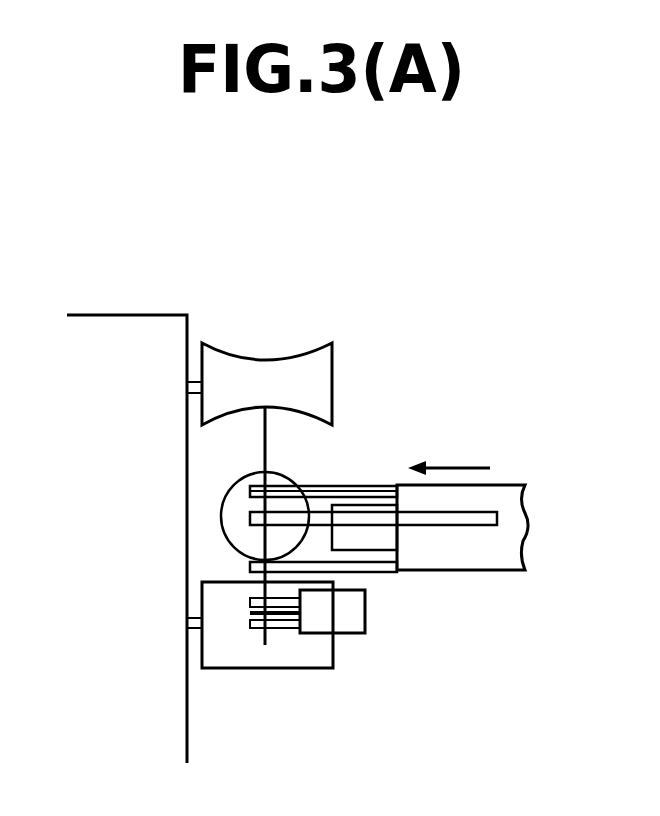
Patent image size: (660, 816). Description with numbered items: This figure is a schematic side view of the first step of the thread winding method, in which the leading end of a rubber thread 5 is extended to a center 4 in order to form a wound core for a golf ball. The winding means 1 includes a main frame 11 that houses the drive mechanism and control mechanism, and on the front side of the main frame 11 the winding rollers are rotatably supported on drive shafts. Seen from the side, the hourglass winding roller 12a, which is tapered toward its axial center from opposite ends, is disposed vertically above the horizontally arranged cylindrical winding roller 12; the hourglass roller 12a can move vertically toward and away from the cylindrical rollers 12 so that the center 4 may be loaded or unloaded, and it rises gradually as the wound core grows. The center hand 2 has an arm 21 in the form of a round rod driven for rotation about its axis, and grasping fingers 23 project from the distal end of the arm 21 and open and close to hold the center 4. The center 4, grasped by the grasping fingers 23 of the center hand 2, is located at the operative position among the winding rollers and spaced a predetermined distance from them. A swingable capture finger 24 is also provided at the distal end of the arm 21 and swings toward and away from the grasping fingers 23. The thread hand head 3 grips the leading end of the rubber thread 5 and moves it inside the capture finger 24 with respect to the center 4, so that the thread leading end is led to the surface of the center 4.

The winding means 1 is at (340, 322).
The center hand 2 is at (507, 476).
The thread hand head 3 is at (355, 620).
The center 4 is at (235, 517).
The rubber thread 5 is at (265, 445).
The main frame 11 is at (137, 342).
The cylindrical winding roller 12 is at (303, 653).
The hourglass winding roller 12a is at (317, 387).
The arm 21 is at (495, 553).
The grasping finger 23 is at (373, 485).
The capture finger 24 is at (290, 520).